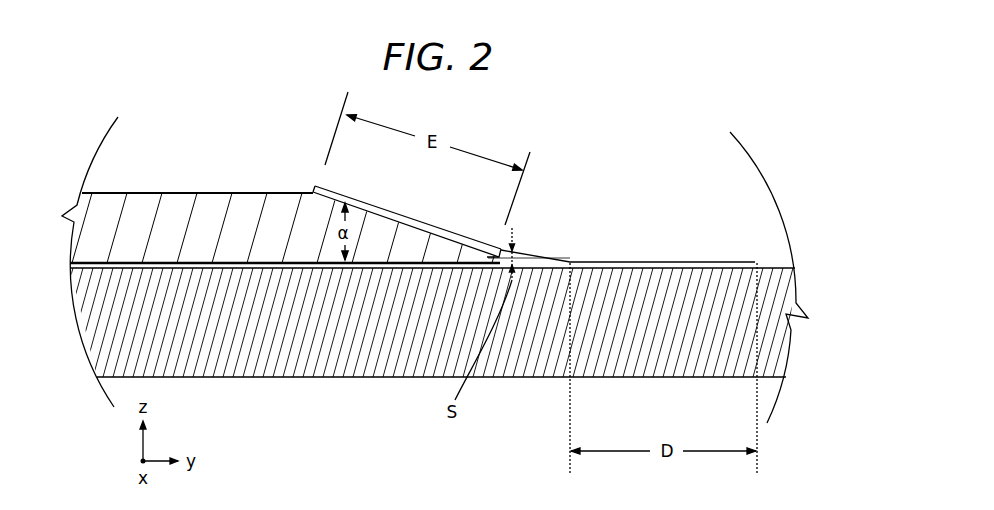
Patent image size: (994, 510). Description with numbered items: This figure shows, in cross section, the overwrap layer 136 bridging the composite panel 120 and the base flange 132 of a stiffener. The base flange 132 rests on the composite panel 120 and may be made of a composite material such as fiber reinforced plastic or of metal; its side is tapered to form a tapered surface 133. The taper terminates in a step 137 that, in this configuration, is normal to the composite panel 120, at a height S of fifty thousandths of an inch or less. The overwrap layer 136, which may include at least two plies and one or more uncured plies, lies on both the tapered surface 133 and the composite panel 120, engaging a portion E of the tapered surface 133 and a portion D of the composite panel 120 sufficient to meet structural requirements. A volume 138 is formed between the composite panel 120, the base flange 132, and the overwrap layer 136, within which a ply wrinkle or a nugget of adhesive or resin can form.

The composite panel 120 is at (280, 378).
The base flange 132 is at (252, 192).
The tapered surface 133 is at (388, 217).
The overwrap layer 136 is at (443, 223).
The step 137 is at (497, 253).
The volume 138 is at (533, 258).